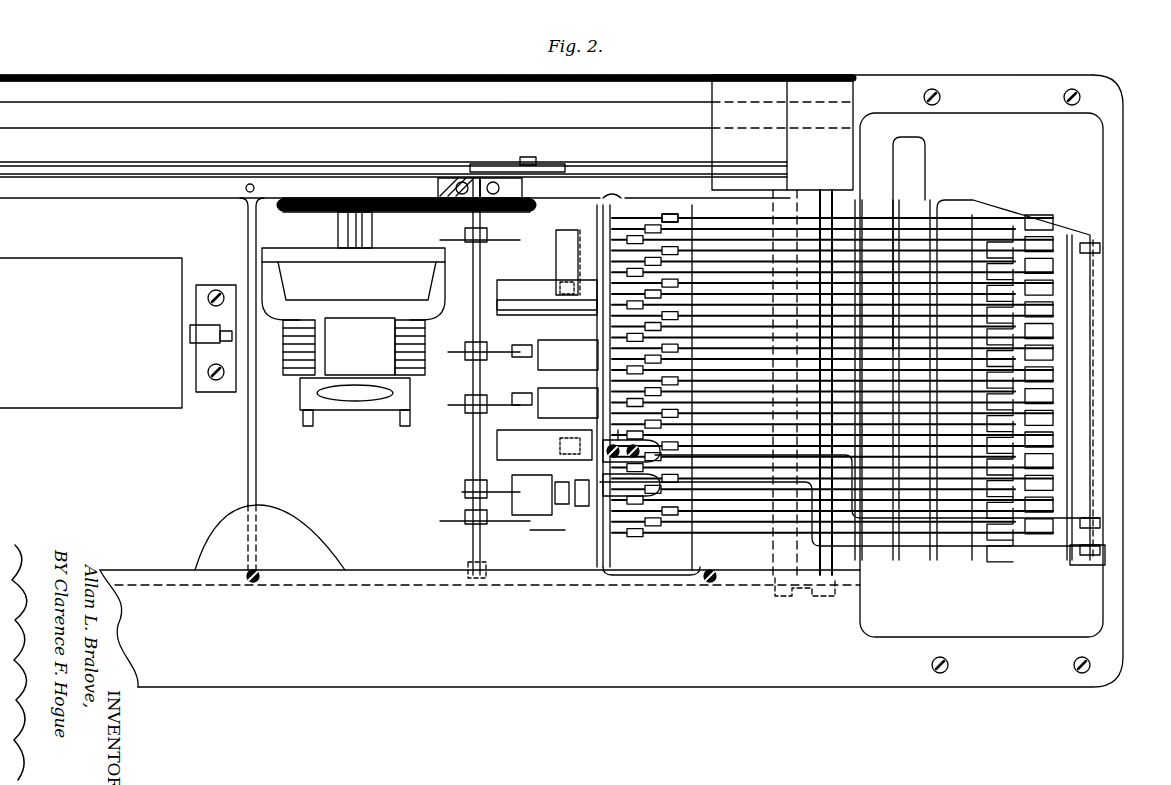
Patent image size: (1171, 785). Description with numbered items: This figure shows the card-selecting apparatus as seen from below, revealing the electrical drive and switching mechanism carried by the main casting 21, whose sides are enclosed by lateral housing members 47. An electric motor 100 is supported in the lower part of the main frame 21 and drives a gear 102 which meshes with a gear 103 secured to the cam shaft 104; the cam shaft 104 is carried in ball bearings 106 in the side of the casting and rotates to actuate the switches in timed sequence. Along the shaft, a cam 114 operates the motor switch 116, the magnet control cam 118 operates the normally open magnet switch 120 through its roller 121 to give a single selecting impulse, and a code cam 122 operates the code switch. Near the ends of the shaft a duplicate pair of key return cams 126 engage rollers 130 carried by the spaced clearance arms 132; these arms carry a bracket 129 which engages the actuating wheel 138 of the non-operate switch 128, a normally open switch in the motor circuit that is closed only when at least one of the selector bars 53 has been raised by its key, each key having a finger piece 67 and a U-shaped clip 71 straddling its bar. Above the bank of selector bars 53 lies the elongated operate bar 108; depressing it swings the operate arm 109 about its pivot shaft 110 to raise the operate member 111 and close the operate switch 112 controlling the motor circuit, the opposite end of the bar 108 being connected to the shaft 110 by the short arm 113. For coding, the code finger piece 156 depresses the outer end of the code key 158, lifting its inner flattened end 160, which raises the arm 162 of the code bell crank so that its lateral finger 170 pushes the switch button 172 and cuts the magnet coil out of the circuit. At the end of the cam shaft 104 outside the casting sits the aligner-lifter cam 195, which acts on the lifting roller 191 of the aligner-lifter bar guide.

The main casting 21 is at (560, 190).
The lateral housing members 47 is at (233, 75).
The selector bars 53 is at (752, 300).
The finger piece 67 is at (1058, 352).
The U-shaped clip 71 is at (671, 214).
The electric motor 100 is at (300, 278).
The gear 102 is at (326, 197).
The gear 103 is at (441, 180).
The cam shaft 104 is at (472, 328).
The ball bearings 106 is at (491, 180).
The operate key or bar 108 is at (1070, 442).
The operate arm 109 is at (1100, 526).
The pivot shaft 110 is at (814, 592).
The operate member 111 is at (618, 462).
The operate switch 112 is at (500, 448).
The short arm 113 is at (1040, 240).
The cam 114 is at (462, 360).
The motor switch 116 is at (540, 345).
The magnet control cam 118 is at (462, 412).
The magnet switch 120 is at (545, 395).
The roller 121 is at (528, 515).
The code cam 122 is at (462, 493).
The key return cams 126 is at (456, 238).
The non-operate switch 128 is at (528, 290).
The bracket 129 is at (578, 232).
The roller 130 is at (460, 260).
The clearance arms 132 is at (556, 236).
The actuating wheel 138 is at (572, 305).
The code finger piece 156 is at (1072, 562).
The code key 158 is at (960, 548).
The inner flattened end 160 is at (637, 492).
The arm 162 is at (585, 525).
The lateral finger 170 is at (556, 522).
The switch button 172 is at (532, 545).
The lifting roller 191 is at (560, 165).
The aligner-lifter cam 195 is at (522, 164).